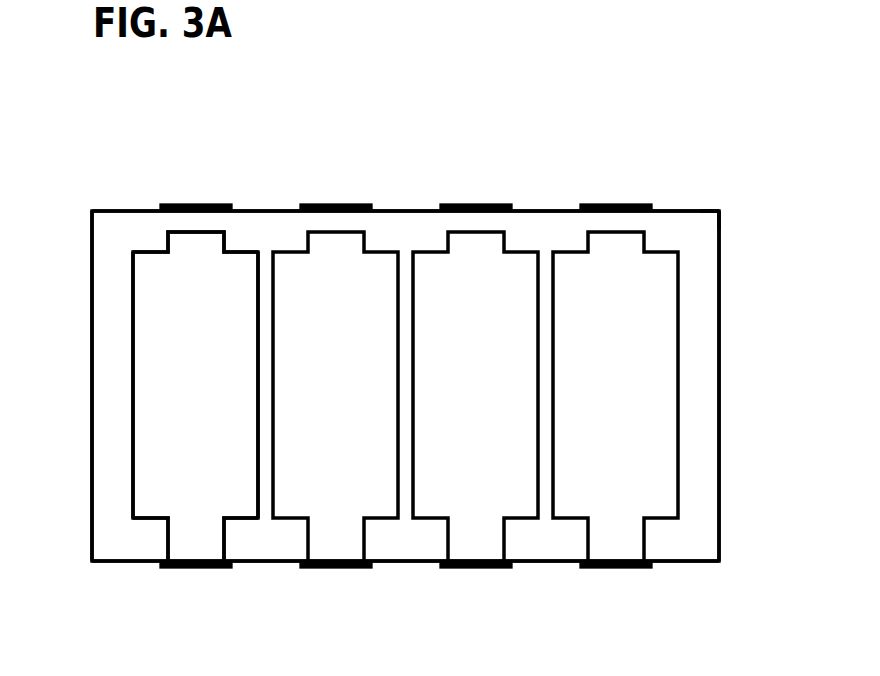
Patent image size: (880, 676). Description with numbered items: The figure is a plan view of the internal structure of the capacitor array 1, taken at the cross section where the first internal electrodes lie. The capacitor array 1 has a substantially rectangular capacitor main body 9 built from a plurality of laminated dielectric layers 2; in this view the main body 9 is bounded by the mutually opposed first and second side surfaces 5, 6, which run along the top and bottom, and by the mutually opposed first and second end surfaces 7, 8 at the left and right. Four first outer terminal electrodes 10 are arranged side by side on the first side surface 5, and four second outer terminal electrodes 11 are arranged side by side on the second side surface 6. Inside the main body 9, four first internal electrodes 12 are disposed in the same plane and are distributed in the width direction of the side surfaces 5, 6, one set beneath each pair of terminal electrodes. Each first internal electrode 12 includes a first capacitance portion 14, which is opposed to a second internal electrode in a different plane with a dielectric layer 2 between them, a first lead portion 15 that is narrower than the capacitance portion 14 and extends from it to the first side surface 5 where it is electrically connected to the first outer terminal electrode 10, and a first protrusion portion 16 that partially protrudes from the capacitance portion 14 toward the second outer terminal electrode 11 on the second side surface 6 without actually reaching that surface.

The capacitor array 1 is at (123, 97).
The dielectric layers 2 is at (710, 263).
The first side surface 5 is at (402, 563).
The second side surface 6 is at (397, 208).
The first end surface 7 is at (92, 344).
The second end surface 8 is at (720, 358).
The capacitor main body 9 is at (719, 211).
The first outer terminal electrodes 10 is at (190, 568).
The second outer terminal electrodes 11 is at (198, 203).
The first internal electrodes 12 is at (133, 393).
The first capacitance portion 14 is at (143, 464).
The first lead portion 15 is at (188, 543).
The first protrusion portion 16 is at (180, 248).